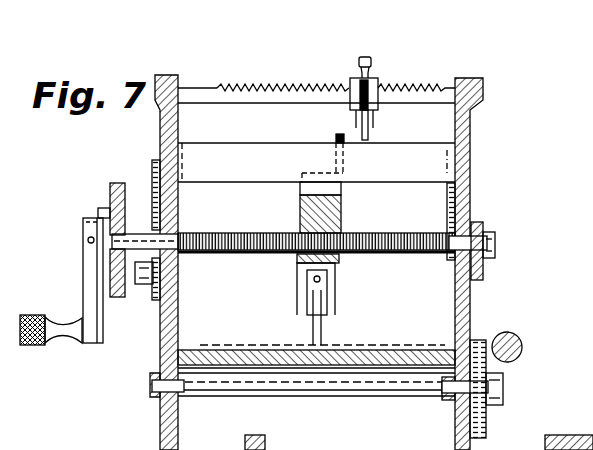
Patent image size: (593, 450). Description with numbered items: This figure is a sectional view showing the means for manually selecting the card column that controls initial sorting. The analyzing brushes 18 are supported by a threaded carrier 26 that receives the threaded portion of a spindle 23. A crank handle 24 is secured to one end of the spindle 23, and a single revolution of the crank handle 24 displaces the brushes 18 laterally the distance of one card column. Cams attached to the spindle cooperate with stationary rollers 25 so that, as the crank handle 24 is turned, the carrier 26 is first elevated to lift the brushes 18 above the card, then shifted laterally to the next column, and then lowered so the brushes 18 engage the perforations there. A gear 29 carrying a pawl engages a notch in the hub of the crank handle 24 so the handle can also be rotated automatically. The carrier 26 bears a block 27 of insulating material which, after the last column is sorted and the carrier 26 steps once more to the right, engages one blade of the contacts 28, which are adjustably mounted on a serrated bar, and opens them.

The analyzing brushes 18 is at (318, 345).
The spindle 23 is at (240, 254).
The crank handle 24 is at (93, 345).
The stationary rollers 25 is at (481, 276).
The carrier 26 is at (345, 207).
The block of insulating material 27 is at (338, 134).
The contacts 28 is at (380, 96).
The gear 29 is at (110, 194).